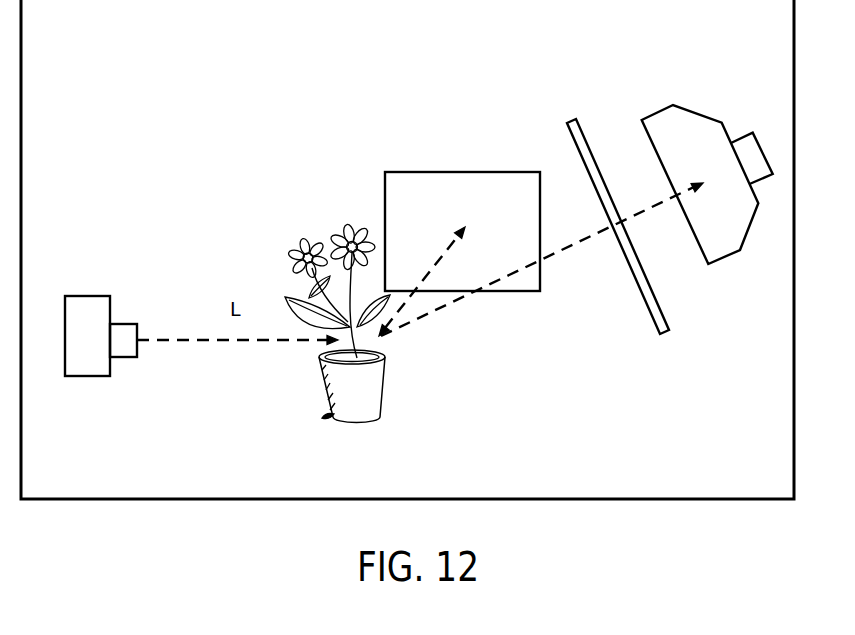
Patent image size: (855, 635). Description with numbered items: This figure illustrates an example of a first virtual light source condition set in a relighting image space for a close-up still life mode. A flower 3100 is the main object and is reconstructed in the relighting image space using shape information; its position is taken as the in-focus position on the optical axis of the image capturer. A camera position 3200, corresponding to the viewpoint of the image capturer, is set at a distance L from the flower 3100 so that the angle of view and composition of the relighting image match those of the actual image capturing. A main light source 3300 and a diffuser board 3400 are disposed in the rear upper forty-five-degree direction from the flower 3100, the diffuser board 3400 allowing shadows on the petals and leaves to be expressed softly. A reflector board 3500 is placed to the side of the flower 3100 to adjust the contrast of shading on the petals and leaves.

The flower 3100 is at (295, 237).
The camera position 3200 is at (83, 296).
The main light source 3300 is at (663, 110).
The diffuser board 3400 is at (573, 121).
The reflector board 3500 is at (403, 172).